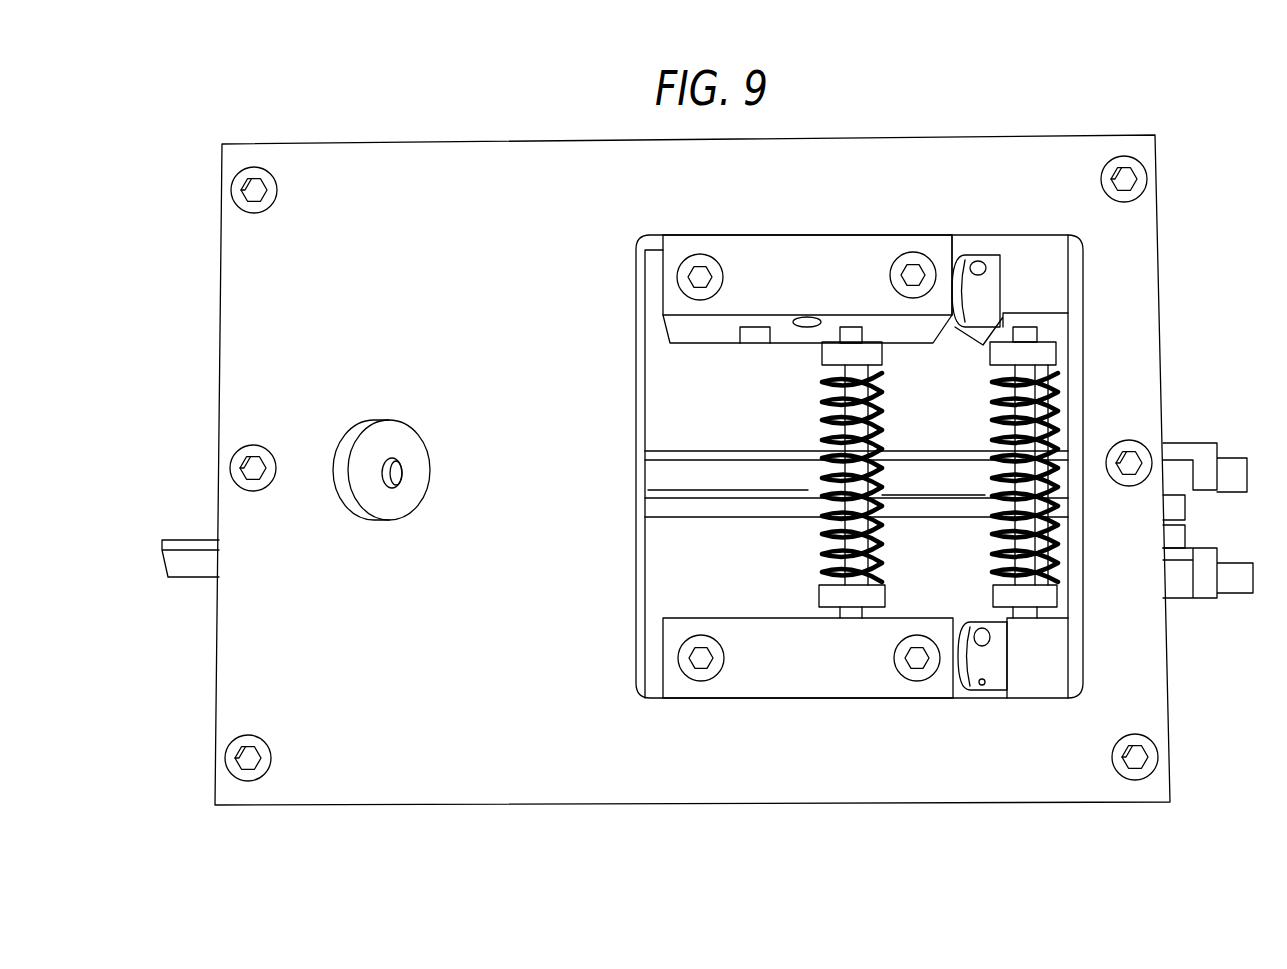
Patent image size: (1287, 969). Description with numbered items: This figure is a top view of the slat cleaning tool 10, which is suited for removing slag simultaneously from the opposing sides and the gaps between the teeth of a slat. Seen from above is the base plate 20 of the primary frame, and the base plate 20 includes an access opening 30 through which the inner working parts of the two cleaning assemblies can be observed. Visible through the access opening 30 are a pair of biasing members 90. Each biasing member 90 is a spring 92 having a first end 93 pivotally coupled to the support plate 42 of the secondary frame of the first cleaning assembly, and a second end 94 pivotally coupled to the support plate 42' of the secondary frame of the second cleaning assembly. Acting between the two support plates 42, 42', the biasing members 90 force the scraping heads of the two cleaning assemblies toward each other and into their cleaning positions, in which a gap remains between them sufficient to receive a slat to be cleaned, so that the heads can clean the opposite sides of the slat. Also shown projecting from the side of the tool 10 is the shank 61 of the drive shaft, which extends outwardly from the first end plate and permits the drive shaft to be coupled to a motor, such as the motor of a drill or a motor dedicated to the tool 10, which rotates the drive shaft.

The tool 10 is at (1034, 127).
The base plate 20 is at (418, 753).
The access opening 30 is at (635, 283).
The support plate 42 is at (812, 541).
The support plate 42' is at (804, 425).
The shank 61 is at (190, 548).
The biasing member 90 is at (808, 407).
The spring 92 is at (822, 530).
The first end 93 is at (838, 596).
The second end 94 is at (857, 348).